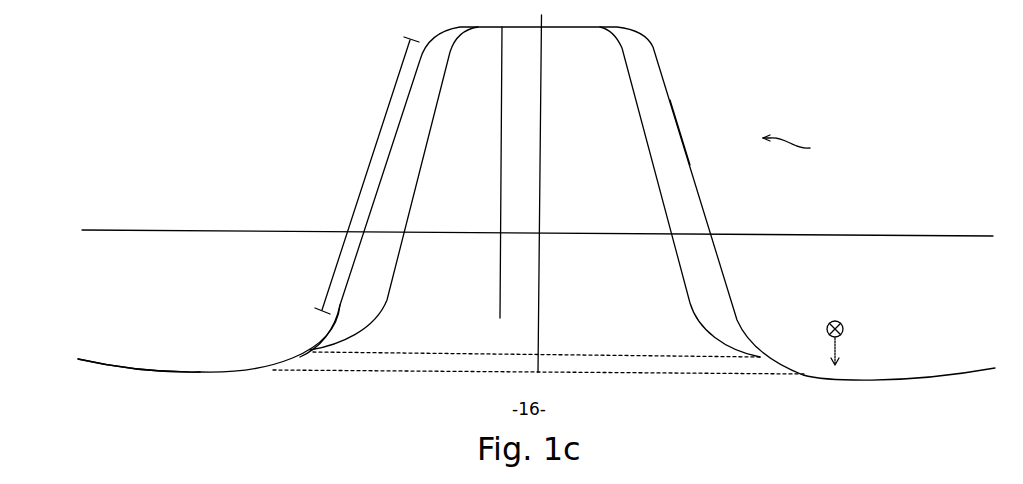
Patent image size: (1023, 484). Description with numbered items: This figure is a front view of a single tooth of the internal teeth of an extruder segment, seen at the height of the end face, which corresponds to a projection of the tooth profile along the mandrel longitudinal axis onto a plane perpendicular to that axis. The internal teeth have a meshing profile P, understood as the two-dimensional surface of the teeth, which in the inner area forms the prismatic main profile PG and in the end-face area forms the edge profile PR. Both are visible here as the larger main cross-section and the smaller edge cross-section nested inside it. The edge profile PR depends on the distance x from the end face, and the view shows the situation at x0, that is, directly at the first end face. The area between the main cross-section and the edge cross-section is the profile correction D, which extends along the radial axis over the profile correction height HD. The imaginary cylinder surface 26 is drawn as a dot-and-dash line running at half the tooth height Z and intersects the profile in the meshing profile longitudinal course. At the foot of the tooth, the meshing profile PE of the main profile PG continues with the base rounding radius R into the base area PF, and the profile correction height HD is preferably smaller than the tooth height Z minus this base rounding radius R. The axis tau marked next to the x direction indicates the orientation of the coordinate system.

The main profile PG is at (715, 78).
The edge profile PR is at (381, 312).
The meshing profile PE is at (349, 225).
The profile correction height HD is at (500, 165).
The tooth height Z is at (541, 128).
The imaginary cylinder surface 26 is at (820, 234).
The base rounding radius R is at (290, 362).
The base area PF is at (183, 372).
The profile correction D is at (690, 173).
The meshing profile P is at (794, 146).
The distance from the end face x is at (842, 342).
The x=0 position x0 is at (928, 285).
The tau axis tau is at (820, 363).